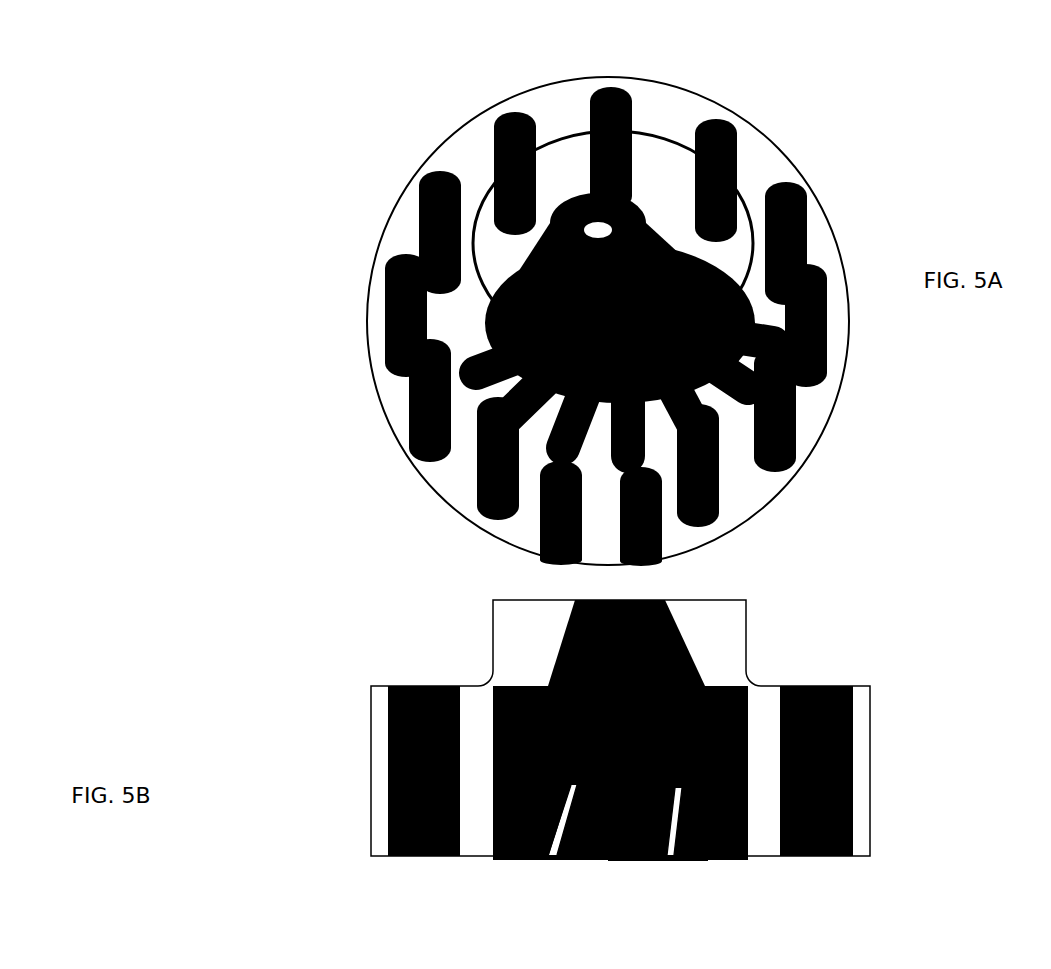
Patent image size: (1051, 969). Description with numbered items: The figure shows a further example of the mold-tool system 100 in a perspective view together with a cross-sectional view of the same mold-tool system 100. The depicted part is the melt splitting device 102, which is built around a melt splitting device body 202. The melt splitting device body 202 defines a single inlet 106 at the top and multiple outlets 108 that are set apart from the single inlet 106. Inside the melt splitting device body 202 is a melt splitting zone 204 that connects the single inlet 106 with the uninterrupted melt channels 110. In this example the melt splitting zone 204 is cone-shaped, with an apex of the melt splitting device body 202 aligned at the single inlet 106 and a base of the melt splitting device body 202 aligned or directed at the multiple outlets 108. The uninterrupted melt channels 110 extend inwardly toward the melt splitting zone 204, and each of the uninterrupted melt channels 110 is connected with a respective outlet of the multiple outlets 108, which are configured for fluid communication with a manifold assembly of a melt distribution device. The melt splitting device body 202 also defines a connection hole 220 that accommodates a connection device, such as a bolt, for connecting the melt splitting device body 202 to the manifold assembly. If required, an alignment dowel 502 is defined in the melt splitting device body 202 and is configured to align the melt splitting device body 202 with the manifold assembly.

In FIG. 5A, the mold-tool system 100 is at (175, 255).
In FIG. 5B, the mold-tool system 100 is at (140, 624).
In FIG. 5A, the melt splitting device 102 is at (268, 313).
In FIG. 5B, the melt splitting device 102 is at (235, 684).
In FIG. 5A, the single inlet 106 is at (598, 200).
In FIG. 5B, the single inlet 106 is at (608, 592).
In FIG. 5B, the multiple outlets 108 is at (475, 848).
In FIG. 5A, the uninterrupted melt channels 110 is at (725, 323).
In FIG. 5B, the uninterrupted melt channels 110 is at (500, 805).
In FIG. 5A, the melt splitting device body 202 is at (662, 90).
In FIG. 5B, the melt splitting device body 202 is at (362, 747).
In FIG. 5A, the melt splitting zone 204 is at (520, 258).
In FIG. 5B, the melt splitting zone 204 is at (530, 697).
In FIG. 5A, the connection hole 220 is at (738, 160).
In FIG. 5B, the alignment dowel 502 is at (622, 827).